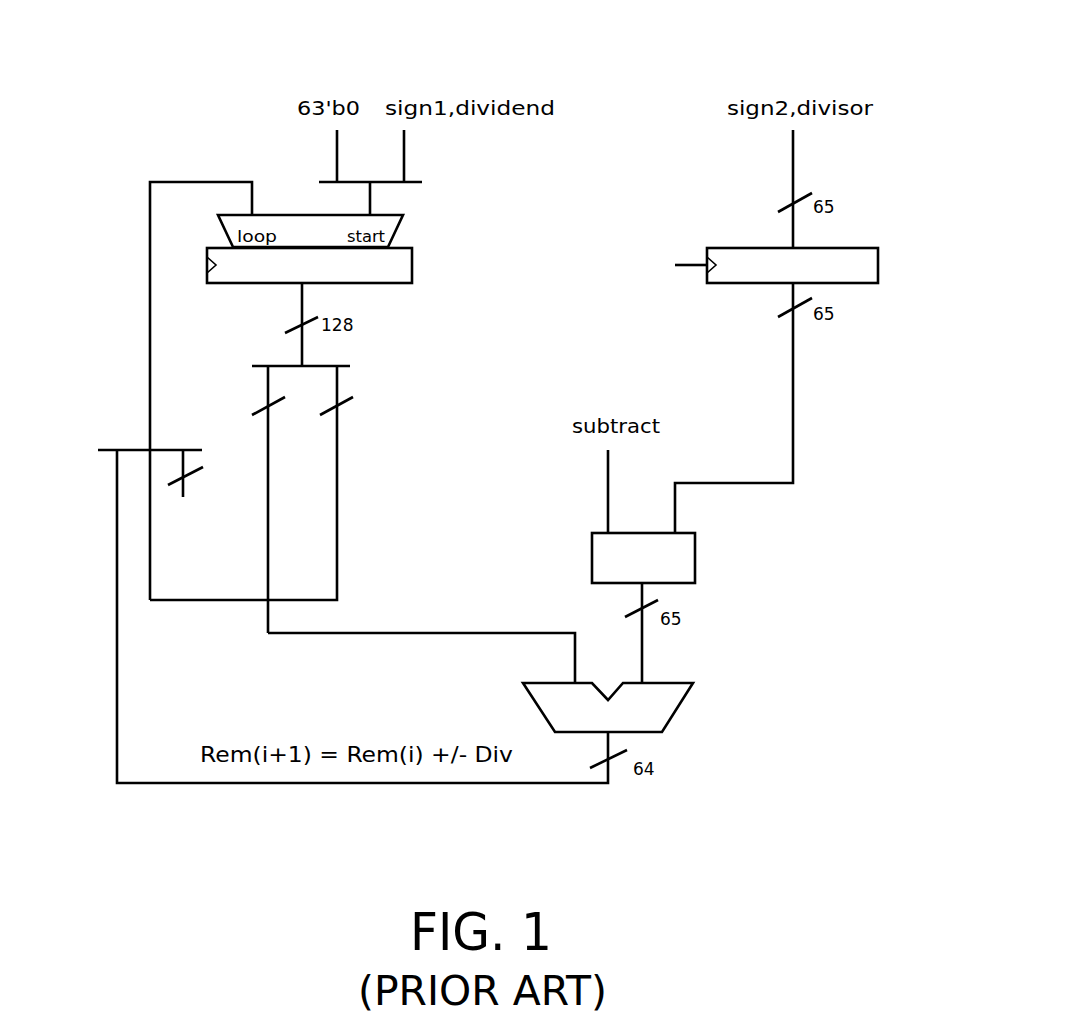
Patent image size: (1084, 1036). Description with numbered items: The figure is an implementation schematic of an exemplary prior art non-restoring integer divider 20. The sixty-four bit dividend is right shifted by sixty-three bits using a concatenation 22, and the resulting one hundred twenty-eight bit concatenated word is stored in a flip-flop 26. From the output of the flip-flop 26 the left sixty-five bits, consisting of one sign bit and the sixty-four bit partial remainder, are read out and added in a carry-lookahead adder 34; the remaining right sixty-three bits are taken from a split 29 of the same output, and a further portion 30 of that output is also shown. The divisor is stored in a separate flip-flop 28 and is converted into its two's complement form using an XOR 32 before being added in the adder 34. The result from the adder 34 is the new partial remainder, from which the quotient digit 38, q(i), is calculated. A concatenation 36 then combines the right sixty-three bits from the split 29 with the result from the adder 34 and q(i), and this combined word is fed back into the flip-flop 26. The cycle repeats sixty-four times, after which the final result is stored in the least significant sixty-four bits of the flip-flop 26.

The non-restoring integer divider 20 is at (238, 56).
The concatenation 22 is at (420, 180).
The flip-flop 26 is at (412, 265).
The flip-flop 28 is at (878, 265).
The split 29 is at (345, 366).
The remainder portion (65 bits) bus 30 is at (268, 478).
The XOR 32 is at (695, 560).
The carry-lookahead adder 34 is at (688, 698).
The concatenation 36 is at (125, 450).
The quotient digit 38 is at (218, 522).